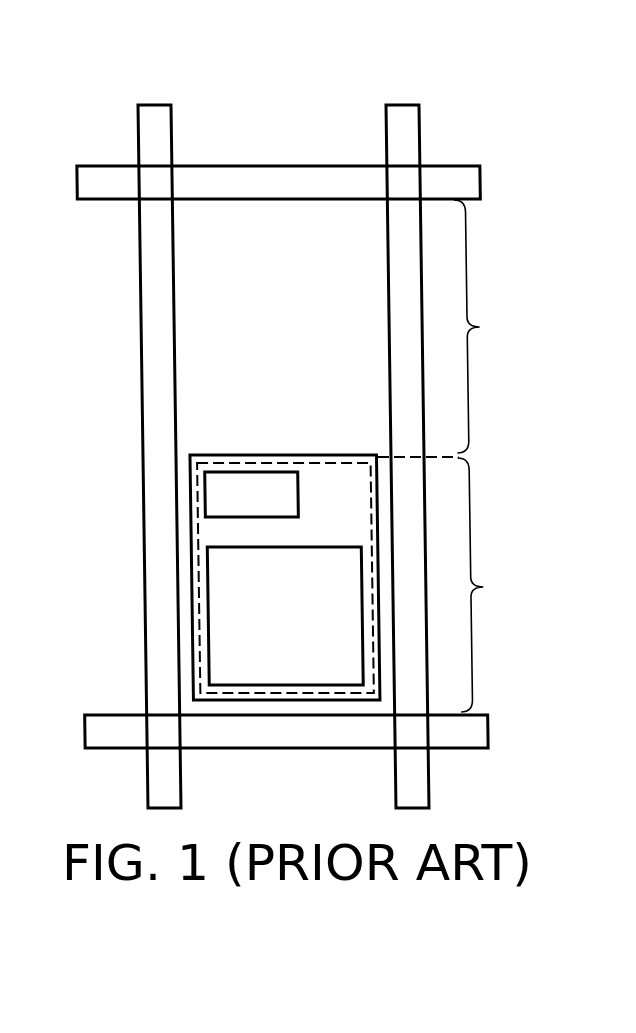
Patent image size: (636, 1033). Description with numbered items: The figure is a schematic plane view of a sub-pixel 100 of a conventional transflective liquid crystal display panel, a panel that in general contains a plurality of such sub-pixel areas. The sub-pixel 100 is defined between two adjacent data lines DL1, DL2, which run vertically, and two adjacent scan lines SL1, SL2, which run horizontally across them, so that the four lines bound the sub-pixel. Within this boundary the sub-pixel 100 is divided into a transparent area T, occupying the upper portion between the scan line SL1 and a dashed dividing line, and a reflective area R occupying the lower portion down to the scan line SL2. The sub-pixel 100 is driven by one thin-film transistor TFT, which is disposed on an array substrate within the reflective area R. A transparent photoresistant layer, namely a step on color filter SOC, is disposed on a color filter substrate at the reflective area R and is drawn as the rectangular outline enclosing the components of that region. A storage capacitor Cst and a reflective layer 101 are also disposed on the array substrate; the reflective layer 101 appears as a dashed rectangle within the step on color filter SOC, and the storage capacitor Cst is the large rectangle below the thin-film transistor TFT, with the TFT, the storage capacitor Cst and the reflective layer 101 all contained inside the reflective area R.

The data line DL1 is at (152, 80).
The data line DL2 is at (400, 80).
The scan line SL1 is at (502, 182).
The scan line SL2 is at (504, 732).
The sub-pixel 100 is at (277, 226).
The transparent area T is at (480, 326).
The reflective area R is at (484, 585).
The thin-film transistor TFT is at (206, 493).
The reflective layer 101 is at (189, 553).
The storage capacitor Cst is at (204, 615).
The step on color filter SOC is at (186, 668).